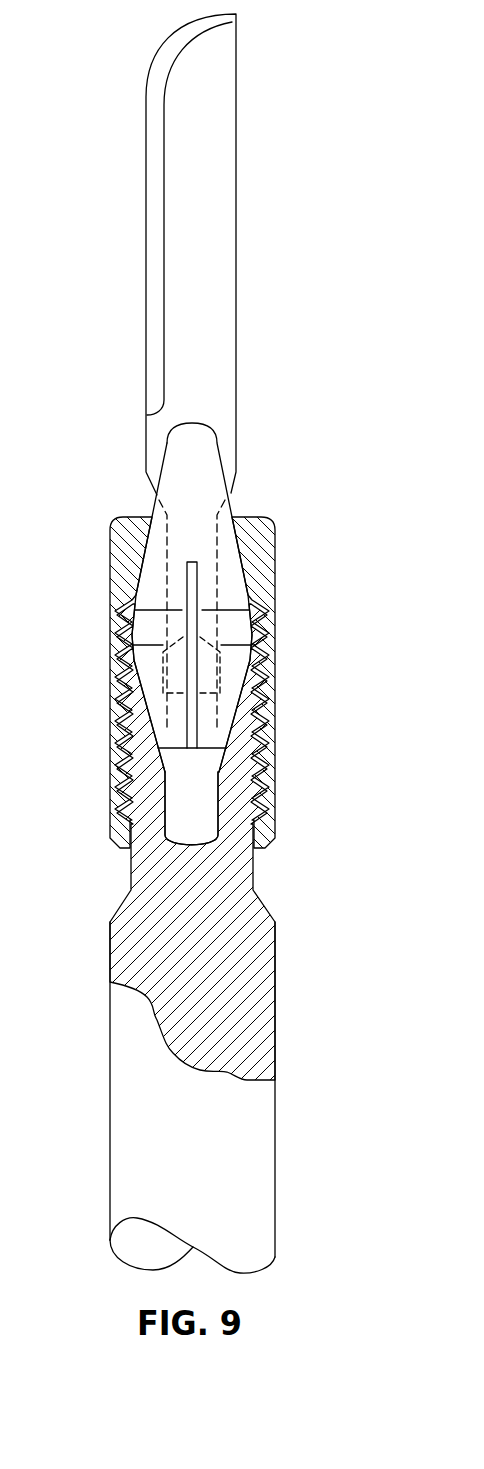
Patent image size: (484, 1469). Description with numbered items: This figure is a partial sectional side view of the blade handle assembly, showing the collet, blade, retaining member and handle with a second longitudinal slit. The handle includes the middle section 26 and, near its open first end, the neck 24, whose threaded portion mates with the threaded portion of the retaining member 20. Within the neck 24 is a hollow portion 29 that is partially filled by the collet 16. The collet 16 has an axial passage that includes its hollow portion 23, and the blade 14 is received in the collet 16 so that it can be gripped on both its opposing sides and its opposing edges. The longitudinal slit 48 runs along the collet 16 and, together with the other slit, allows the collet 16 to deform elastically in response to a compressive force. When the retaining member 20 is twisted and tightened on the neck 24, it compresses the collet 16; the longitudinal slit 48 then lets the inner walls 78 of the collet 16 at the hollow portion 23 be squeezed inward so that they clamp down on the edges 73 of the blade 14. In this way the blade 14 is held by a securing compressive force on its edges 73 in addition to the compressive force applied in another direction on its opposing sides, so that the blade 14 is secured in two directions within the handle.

The blade 14 is at (236, 108).
The collet 16 is at (163, 442).
The retaining member 20 is at (117, 527).
The edges of the blade 73 is at (165, 583).
The longitudinal slit 48 is at (192, 582).
The inner walls of the collet 78 is at (165, 725).
The hollow portion of the collet 23 is at (208, 717).
The hollow portion of the neck 29 is at (213, 823).
The neck 24 is at (255, 865).
The middle section 26 is at (263, 1168).